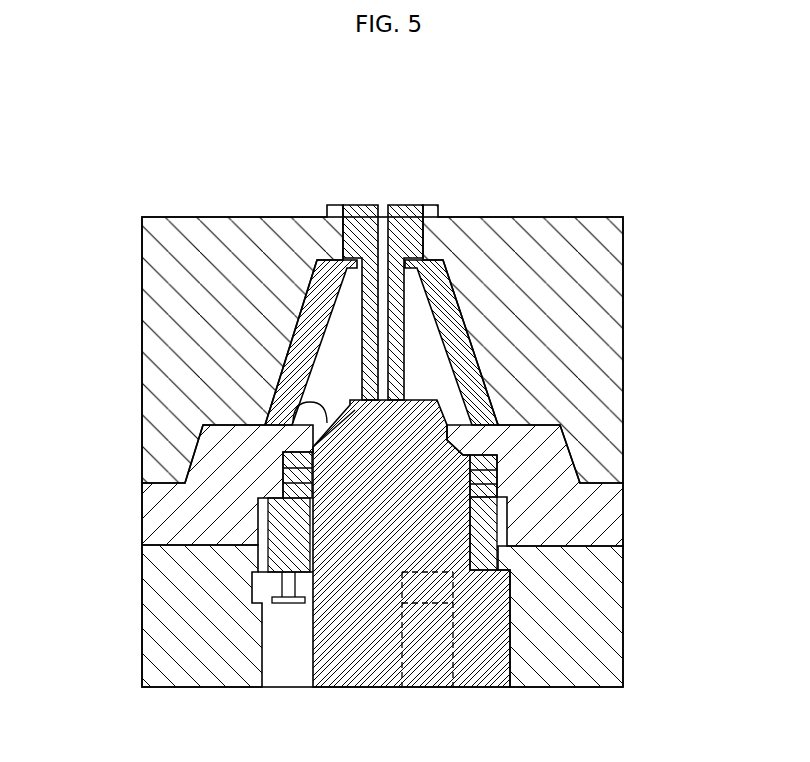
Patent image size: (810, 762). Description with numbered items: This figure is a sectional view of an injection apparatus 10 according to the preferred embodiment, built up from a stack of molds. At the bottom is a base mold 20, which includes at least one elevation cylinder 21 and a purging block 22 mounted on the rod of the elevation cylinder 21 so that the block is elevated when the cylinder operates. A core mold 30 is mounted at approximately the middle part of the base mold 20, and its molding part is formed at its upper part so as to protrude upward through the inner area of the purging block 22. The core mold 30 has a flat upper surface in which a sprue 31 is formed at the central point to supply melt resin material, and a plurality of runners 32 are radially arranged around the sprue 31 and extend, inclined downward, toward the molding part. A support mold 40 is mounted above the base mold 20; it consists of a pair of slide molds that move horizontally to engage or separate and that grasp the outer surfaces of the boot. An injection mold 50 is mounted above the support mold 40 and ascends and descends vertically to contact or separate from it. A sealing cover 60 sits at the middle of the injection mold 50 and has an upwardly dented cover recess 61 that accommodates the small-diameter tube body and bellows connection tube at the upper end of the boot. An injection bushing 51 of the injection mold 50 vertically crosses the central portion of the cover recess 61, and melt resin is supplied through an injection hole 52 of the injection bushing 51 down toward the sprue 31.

The injection apparatus 10 is at (145, 143).
The base mold 20 is at (622, 610).
The elevation cylinder 21 is at (307, 648).
The purging block 22 is at (268, 566).
The core mold 30 is at (381, 460).
The sprue 31 is at (378, 405).
The runners 32 is at (270, 410).
The support mold 40 is at (622, 470).
The injection mold 50 is at (624, 214).
The injection bushing 51 is at (315, 216).
The injection hole 52 is at (384, 215).
The sealing cover 60 is at (316, 254).
The cover recess 61 is at (428, 350).